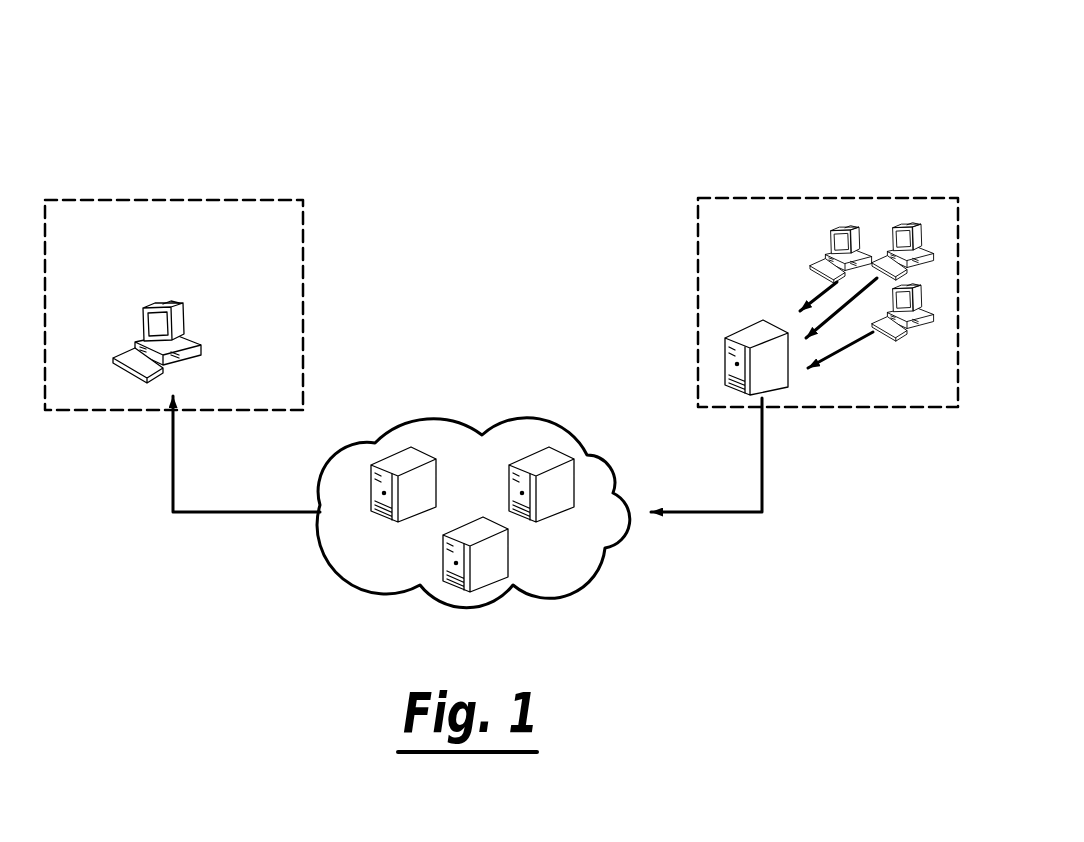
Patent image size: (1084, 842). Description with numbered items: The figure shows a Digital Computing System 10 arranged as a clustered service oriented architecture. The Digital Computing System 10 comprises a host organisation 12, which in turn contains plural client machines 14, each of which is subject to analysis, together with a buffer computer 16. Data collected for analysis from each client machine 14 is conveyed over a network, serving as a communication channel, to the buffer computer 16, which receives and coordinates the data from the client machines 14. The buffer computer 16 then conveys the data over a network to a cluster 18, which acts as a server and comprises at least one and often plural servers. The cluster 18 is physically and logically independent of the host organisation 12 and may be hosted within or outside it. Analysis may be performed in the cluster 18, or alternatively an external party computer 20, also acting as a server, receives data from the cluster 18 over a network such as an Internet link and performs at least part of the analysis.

The Digital Computing System 10 is at (527, 135).
The host organisation 12 is at (762, 222).
The client machines 14 is at (930, 253).
The buffer computer 16 is at (747, 338).
The cluster 18 is at (445, 438).
The external party computer 20 is at (163, 232).